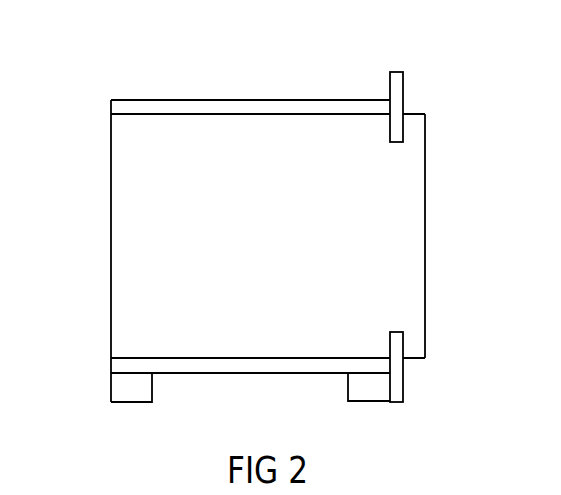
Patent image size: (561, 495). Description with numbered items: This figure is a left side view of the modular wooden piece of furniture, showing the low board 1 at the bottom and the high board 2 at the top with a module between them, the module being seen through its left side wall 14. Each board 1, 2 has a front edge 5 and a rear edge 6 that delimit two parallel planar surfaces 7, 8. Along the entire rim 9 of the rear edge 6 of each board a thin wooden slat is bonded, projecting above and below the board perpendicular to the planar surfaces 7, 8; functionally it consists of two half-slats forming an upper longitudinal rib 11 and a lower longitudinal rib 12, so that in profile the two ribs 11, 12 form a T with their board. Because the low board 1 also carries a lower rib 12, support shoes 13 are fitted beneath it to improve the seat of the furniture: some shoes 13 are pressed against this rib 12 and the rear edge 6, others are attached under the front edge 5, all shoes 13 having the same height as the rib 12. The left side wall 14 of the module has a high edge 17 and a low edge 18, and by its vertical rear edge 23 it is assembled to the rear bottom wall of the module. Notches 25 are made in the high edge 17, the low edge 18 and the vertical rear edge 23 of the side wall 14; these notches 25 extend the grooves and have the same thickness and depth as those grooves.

The low board 1 is at (178, 365).
The high board 2 is at (183, 103).
The front edge 5 is at (135, 104).
The rear edge 6 is at (378, 100).
The planar surface 7 is at (260, 100).
The planar surface 8 is at (302, 117).
The rim 9 is at (390, 110).
The upper longitudinal rib 11 is at (397, 85).
The lower longitudinal rib 12 is at (395, 142).
The support shoe 13 is at (128, 392).
The left side wall 14 is at (150, 197).
The high edge 17 is at (130, 126).
The low edge 18 is at (120, 337).
The vertical rear edge 23 is at (390, 188).
The notch 25 is at (395, 332).